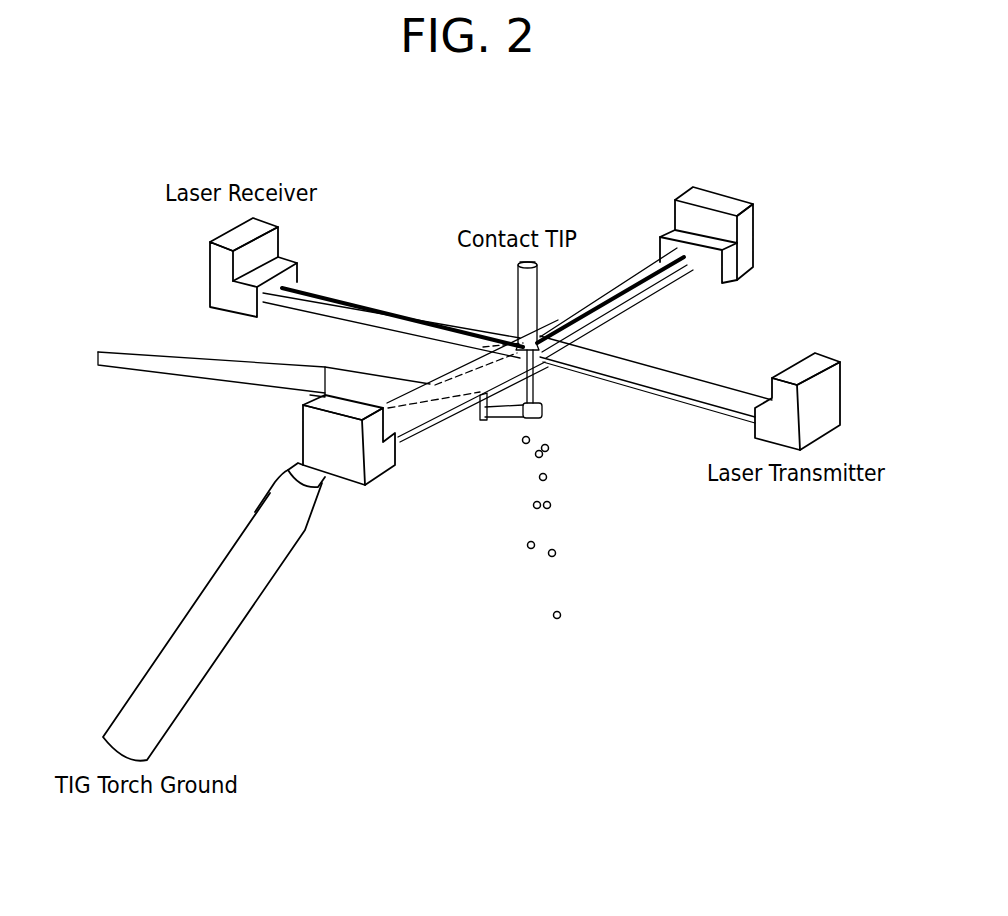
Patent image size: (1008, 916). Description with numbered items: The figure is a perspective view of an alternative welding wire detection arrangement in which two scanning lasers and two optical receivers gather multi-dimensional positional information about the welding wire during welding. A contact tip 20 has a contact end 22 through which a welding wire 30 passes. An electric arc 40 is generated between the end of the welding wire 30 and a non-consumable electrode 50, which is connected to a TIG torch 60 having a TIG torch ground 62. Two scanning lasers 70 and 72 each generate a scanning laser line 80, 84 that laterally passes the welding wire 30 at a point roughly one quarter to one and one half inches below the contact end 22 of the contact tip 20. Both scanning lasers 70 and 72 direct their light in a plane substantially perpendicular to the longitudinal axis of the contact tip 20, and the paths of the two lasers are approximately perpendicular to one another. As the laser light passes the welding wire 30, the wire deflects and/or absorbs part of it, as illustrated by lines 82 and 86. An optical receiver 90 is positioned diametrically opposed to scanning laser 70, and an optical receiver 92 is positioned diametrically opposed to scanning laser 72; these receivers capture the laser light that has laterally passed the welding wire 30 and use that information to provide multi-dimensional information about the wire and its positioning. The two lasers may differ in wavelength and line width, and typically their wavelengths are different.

The contact tip 20 is at (530, 279).
The contact end 22 is at (518, 323).
The welding wire 30 is at (518, 263).
The electric arc 40 is at (535, 383).
The non-consumable electrode 50 is at (537, 427).
The TIG torch 60 is at (352, 377).
The TIG torch ground 62 is at (198, 662).
The scanning laser 70 is at (832, 385).
The scanning laser 72 is at (380, 468).
The scanning laser line 80 is at (715, 387).
The line 82 is at (352, 301).
The scanning laser line 84 is at (460, 372).
The line 86 is at (667, 283).
The optical receiver 90 is at (218, 267).
The optical receiver 92 is at (758, 232).